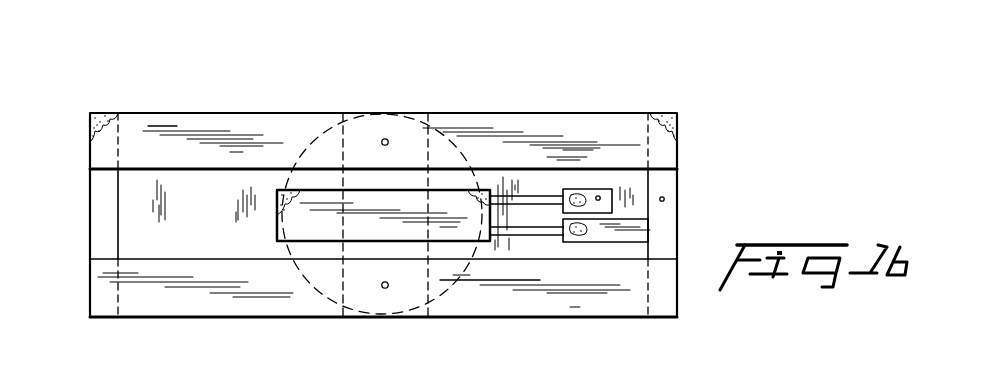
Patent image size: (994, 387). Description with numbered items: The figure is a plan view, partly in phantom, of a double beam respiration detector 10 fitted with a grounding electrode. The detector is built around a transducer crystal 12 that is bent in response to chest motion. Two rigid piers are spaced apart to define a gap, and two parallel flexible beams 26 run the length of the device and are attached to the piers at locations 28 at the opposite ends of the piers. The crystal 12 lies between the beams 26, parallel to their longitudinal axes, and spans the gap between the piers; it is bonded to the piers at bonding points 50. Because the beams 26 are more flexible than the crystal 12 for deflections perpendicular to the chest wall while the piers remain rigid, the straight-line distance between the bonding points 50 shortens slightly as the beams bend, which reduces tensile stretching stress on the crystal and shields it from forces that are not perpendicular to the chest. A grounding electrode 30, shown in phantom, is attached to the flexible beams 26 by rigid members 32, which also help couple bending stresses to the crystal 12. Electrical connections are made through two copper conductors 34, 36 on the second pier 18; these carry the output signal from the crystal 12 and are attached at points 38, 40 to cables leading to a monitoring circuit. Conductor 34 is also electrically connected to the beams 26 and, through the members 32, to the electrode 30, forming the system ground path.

The respiration detector 10 is at (740, 146).
The transducer crystal 12 is at (347, 222).
The second rigid pier 18 is at (528, 248).
The flexible beams 26 is at (170, 142).
The attachment locations 28 is at (100, 117).
The grounding electrode 30 is at (467, 317).
The rigid members 32 is at (385, 138).
The copper conductor 34 is at (548, 234).
The copper conductor 36 is at (548, 197).
The attachment point 38 is at (604, 200).
The attachment point 40 is at (665, 197).
The bonding points 50 is at (283, 190).